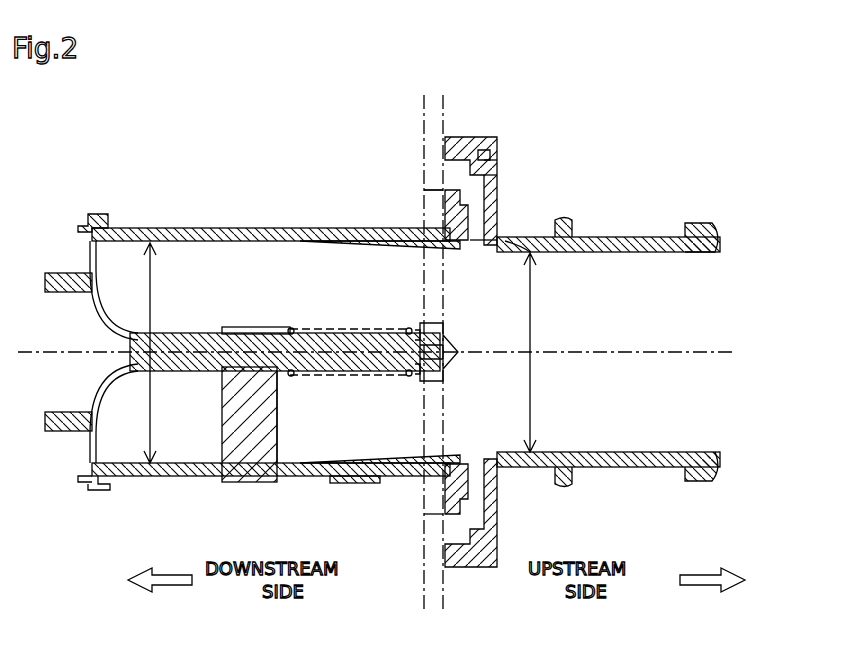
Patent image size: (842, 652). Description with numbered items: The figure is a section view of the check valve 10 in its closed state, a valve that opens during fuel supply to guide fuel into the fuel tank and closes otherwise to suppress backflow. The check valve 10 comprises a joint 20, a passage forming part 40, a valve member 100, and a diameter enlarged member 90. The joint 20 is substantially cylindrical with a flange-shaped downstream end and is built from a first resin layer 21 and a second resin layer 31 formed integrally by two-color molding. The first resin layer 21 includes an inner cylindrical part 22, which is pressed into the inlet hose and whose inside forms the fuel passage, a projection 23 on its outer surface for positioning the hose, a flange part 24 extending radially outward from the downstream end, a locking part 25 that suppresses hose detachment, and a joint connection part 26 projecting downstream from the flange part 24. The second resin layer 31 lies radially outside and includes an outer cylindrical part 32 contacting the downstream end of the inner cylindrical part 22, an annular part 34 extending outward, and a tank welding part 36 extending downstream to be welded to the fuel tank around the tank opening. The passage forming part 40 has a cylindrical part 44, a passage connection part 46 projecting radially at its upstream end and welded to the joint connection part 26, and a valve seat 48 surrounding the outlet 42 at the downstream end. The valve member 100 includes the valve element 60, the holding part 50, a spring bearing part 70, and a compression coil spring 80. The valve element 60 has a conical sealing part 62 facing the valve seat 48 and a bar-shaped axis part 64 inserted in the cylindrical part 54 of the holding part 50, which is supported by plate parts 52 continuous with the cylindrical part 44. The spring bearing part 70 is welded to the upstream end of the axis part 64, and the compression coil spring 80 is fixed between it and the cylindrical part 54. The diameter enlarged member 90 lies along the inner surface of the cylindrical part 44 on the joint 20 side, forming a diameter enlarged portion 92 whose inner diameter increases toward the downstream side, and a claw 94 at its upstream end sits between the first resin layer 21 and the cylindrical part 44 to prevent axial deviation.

The check valve 10 is at (128, 165).
The joint 20 is at (625, 323).
The first resin layer 21 is at (625, 237).
The inner cylindrical part 22 is at (620, 255).
The projection 23 is at (568, 220).
The flange part 24 is at (498, 180).
The locking part 25 is at (705, 226).
The joint connection part 26 is at (498, 215).
The second resin layer 31 is at (492, 138).
The outer cylindrical part 32 is at (545, 255).
The annular part 34 is at (498, 152).
The tank welding part 36 is at (455, 138).
The passage forming part 40 is at (254, 317).
The outlet 42 is at (135, 436).
The cylindrical part 44 is at (158, 230).
The passage connection part 46 is at (448, 192).
The valve seat 48 is at (84, 220).
The holding part 50 is at (301, 453).
The plate parts 52 is at (282, 448).
The cylindrical part 54 is at (236, 326).
The valve element 60 is at (294, 335).
The sealing part 62 is at (95, 305).
The axis part 64 is at (212, 368).
The spring bearing part 70 is at (428, 322).
The compression coil spring 80 is at (335, 328).
The diameter enlarged member 90 is at (455, 272).
The diameter enlarged portion 92 is at (402, 458).
The claw 94 is at (465, 462).
The valve member 100 is at (300, 490).